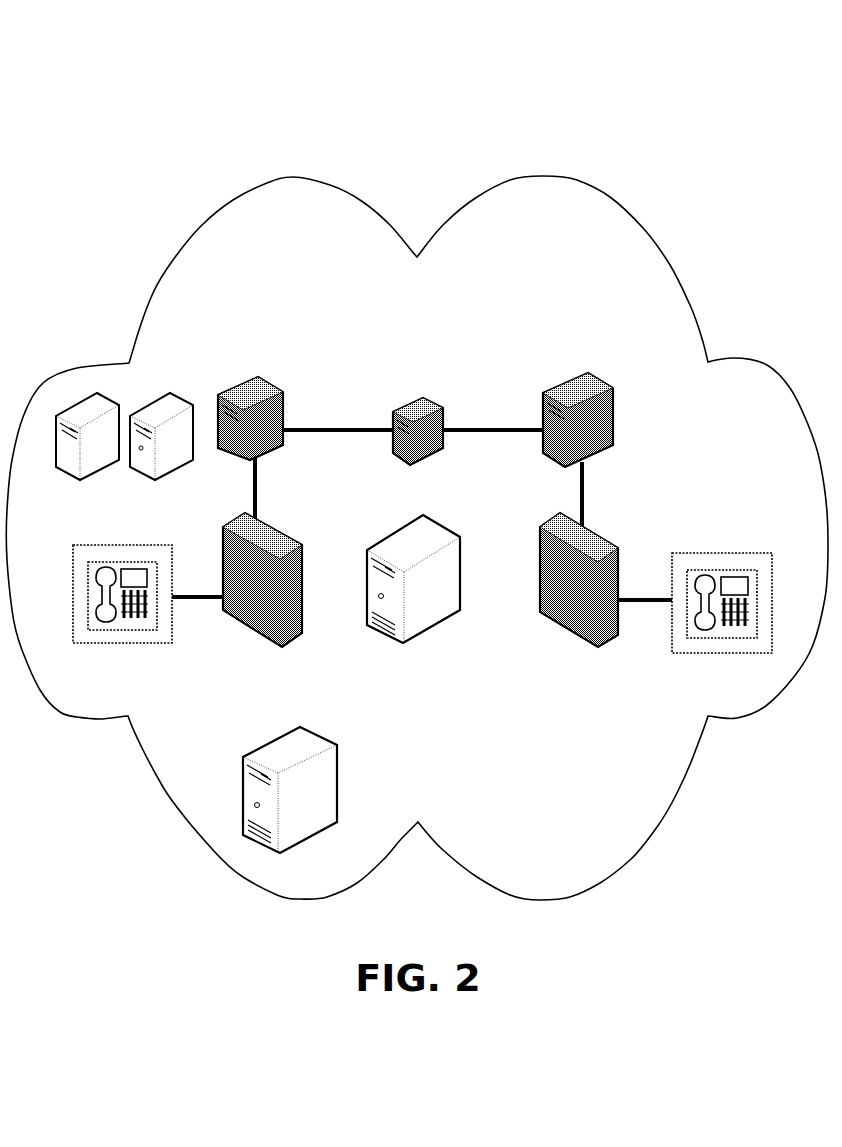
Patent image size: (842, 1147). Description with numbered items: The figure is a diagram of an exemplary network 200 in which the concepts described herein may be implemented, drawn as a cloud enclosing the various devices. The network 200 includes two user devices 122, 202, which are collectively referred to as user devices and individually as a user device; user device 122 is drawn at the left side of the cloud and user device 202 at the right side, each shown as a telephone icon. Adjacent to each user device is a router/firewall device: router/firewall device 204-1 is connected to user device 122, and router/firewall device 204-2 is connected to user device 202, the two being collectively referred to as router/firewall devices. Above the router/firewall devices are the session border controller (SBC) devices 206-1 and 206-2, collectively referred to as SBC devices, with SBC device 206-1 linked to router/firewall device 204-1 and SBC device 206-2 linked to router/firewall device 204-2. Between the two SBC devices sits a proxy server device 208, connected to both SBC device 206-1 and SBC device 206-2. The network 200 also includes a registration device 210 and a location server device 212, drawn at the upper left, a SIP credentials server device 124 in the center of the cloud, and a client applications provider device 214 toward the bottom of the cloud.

The network 200 is at (418, 88).
The registration device 210 is at (97, 393).
The location server device 212 is at (168, 393).
The session border controller (SBC) device 206-1 is at (247, 410).
The proxy server device 208 is at (412, 412).
The session border controller (SBC) device 206-2 is at (588, 410).
The router/firewall device 204-1 is at (253, 632).
The router/firewall device 204-2 is at (567, 632).
The user device 122 is at (123, 643).
The user device 202 is at (720, 553).
The SIP credentials server device 124 is at (402, 643).
The client applications provider device 214 is at (338, 777).